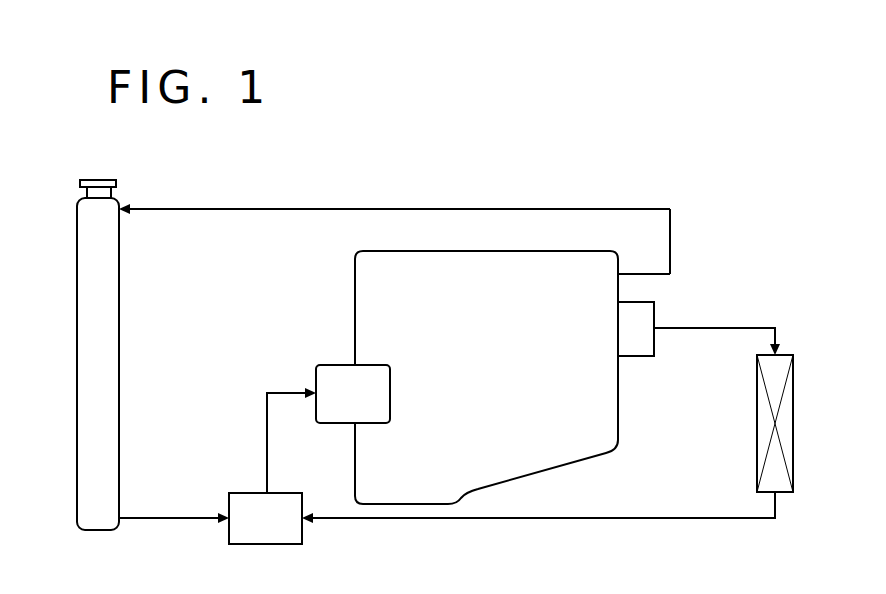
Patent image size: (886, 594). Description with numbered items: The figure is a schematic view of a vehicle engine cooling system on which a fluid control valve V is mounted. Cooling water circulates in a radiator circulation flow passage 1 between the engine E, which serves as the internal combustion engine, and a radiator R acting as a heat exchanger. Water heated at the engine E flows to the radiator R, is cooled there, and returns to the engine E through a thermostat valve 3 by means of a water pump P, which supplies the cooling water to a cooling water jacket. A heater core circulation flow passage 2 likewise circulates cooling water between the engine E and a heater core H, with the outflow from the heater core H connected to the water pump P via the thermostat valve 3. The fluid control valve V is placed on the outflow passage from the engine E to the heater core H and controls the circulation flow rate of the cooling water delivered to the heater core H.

The radiator circulation flow passage 1 is at (416, 208).
The heater core circulation flow passage 2 is at (716, 326).
The thermostat valve 3 is at (237, 491).
The radiator R is at (77, 312).
The engine E is at (357, 298).
The water pump P is at (330, 370).
The fluid control valve V is at (641, 349).
The heater core H is at (793, 422).